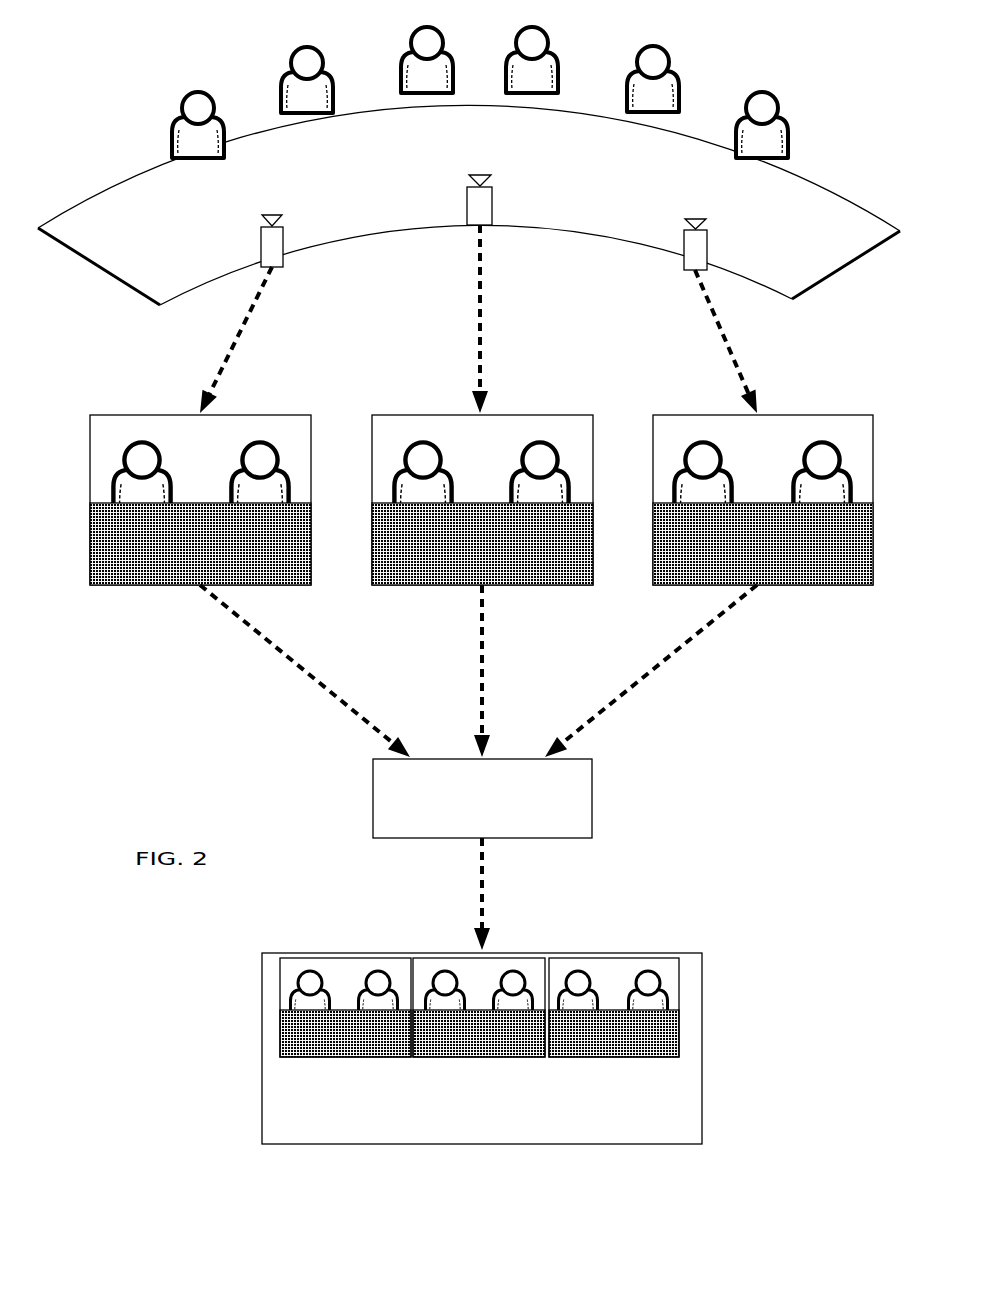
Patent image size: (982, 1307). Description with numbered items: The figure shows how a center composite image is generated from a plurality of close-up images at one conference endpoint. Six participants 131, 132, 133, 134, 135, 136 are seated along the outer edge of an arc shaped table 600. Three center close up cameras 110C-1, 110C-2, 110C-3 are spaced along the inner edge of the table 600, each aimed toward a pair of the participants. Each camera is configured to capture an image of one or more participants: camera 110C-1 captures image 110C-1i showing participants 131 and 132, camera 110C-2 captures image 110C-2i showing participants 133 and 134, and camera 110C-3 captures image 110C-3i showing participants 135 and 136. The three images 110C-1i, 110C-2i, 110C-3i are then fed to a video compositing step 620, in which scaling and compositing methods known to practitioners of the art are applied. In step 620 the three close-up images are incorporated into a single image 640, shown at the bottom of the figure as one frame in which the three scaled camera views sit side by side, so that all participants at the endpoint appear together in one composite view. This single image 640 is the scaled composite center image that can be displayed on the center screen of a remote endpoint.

The participant 131 is at (165, 282).
The participant 132 is at (273, 266).
The participant 133 is at (415, 260).
The participant 134 is at (531, 260).
The participant 135 is at (679, 268).
The participant 136 is at (793, 290).
The center close up camera 110C-1 is at (304, 228).
The center close up camera 110C-2 is at (514, 198).
The center close up camera 110C-3 is at (728, 236).
The image 110C-1i is at (200, 500).
The image 110C-2i is at (482, 500).
The image 110C-3i is at (763, 500).
The arc shaped table 600 is at (97, 254).
The step 620 is at (498, 813).
The single image 640 is at (711, 1037).